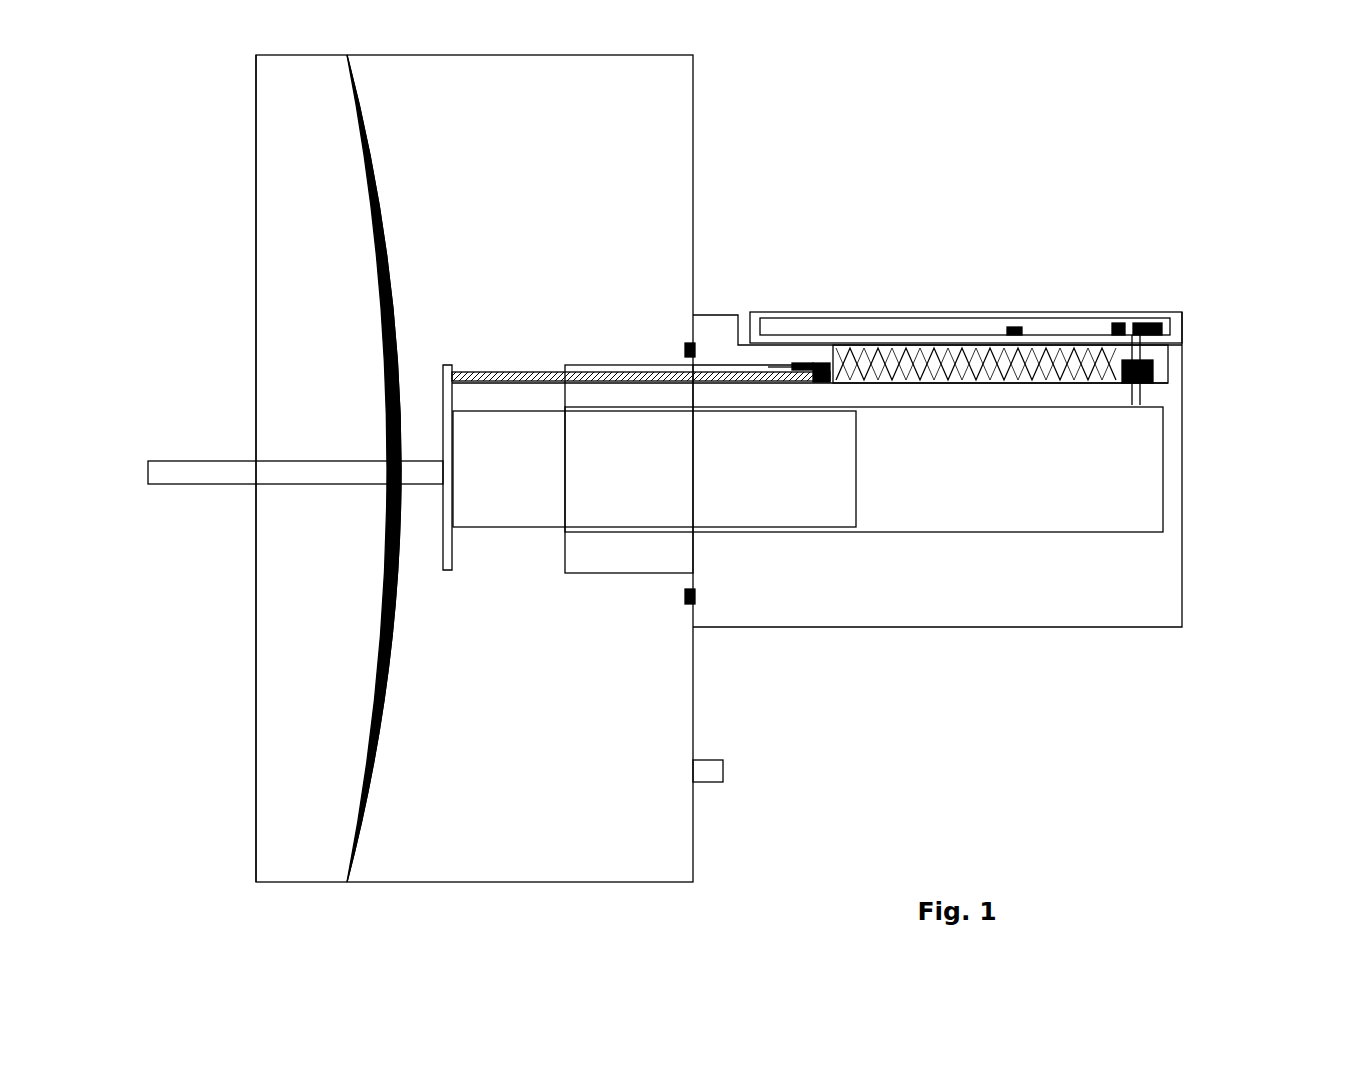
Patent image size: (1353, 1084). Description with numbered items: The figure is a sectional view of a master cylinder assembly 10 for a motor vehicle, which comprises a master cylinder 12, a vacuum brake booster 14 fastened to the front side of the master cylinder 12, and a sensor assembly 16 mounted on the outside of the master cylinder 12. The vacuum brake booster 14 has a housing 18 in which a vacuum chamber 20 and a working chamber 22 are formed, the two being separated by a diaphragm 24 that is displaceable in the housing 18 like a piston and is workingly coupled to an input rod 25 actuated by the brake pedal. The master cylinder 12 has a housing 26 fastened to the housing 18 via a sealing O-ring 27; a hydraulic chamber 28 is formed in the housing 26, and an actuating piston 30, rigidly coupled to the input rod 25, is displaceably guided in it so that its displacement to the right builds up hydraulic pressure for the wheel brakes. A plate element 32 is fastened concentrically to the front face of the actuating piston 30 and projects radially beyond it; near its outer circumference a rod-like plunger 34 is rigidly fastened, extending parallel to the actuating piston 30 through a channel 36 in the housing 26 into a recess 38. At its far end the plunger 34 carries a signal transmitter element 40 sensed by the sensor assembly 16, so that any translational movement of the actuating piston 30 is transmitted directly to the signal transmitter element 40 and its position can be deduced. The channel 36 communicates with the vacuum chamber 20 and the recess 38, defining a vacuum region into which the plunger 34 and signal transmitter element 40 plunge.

The master cylinder assembly 10 is at (138, 777).
The master cylinder 12 is at (1198, 663).
The vacuum brake booster 14 is at (205, 240).
The sensor assembly 16 is at (1078, 237).
The housing 18 is at (557, 880).
The vacuum chamber 20 is at (665, 832).
The working chamber 22 is at (295, 650).
The diaphragm 24 is at (390, 257).
The input rod 25 is at (204, 472).
The housing 26 is at (900, 609).
The O-ring 27 is at (695, 343).
The hydraulic chamber 28 is at (1143, 445).
The actuating piston 30 is at (824, 509).
The plate element 32 is at (447, 580).
The plunger 34 is at (518, 377).
The channel 36 is at (768, 366).
The recess 38 is at (950, 352).
The signal transmitter element 40 is at (806, 365).